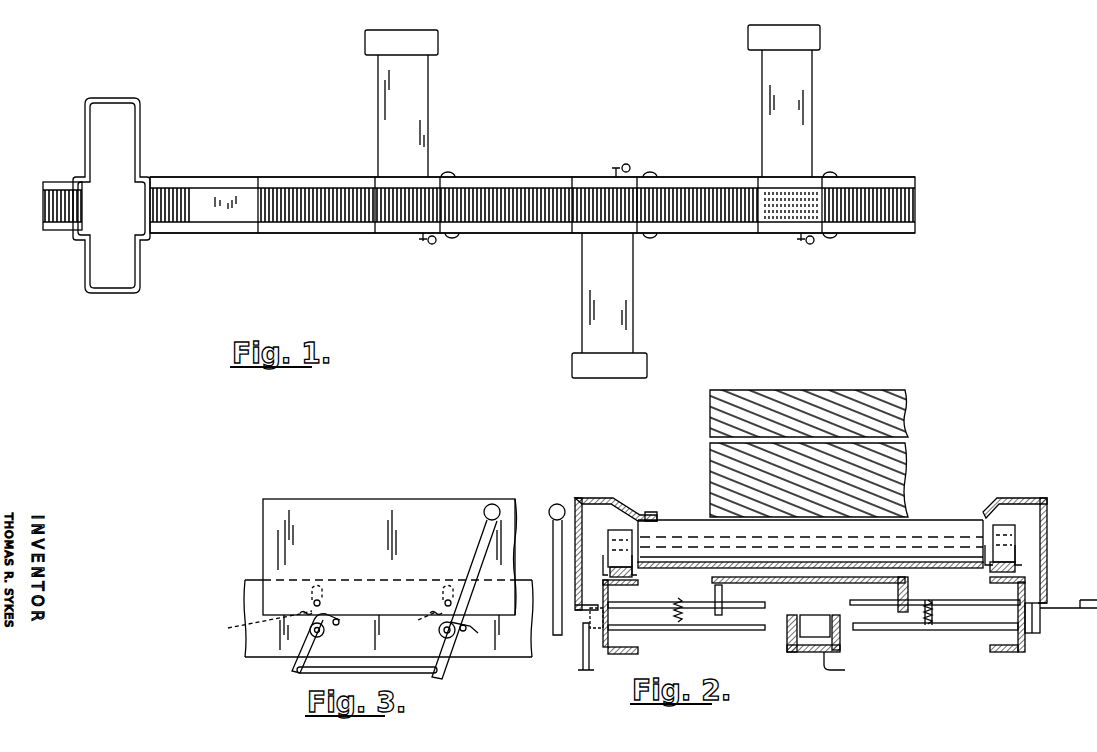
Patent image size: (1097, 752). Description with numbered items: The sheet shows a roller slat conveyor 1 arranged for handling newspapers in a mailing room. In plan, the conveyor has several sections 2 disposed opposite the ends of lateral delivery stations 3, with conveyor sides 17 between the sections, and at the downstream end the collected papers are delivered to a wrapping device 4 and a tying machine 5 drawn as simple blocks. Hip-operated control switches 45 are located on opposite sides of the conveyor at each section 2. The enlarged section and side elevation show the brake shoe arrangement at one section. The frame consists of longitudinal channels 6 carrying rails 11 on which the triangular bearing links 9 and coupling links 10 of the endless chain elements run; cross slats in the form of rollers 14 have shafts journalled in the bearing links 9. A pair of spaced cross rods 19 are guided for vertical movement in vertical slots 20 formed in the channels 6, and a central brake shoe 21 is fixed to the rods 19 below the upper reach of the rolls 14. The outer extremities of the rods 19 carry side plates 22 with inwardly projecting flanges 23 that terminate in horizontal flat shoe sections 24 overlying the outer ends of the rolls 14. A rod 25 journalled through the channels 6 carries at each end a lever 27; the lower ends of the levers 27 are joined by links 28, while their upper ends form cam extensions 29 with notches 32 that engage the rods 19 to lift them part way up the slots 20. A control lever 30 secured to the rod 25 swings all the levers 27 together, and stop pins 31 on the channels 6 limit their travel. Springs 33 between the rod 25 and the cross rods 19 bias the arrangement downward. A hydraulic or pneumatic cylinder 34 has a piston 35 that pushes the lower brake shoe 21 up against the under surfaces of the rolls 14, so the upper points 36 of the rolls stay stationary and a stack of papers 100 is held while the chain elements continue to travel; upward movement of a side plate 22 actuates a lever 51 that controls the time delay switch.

In FIG. 1, the roller slat conveyor 1 is at (516, 168).
In FIG. 1, the conveyor sections 2 is at (402, 208).
In FIG. 1, the lateral delivery stations 3 is at (416, 90).
In FIG. 1, the wrapping device 4 is at (220, 186).
In FIG. 2, the wrapping device 4 is at (788, 357).
In FIG. 1, the tying machine 5 is at (113, 115).
In FIG. 1, the sides 17 is at (315, 234).
In FIG. 1, the control switches 45 is at (455, 173).
In FIG. 2, the papers 100 is at (858, 390).
In FIG. 2, the side plates 22 is at (573, 518).
In FIG. 2, the flanges 23 is at (600, 497).
In FIG. 2, the horizontal flat shoe sections 24 is at (645, 512).
In FIG. 2, the rollers 14 is at (690, 530).
In FIG. 2, the upper points of the rolls 36 is at (655, 513).
In FIG. 3, the control lever 30 is at (486, 506).
In FIG. 2, the control lever 30 is at (553, 558).
In FIG. 2, the springs 33 is at (679, 600).
In FIG. 2, the rod 25 is at (722, 628).
In FIG. 3, the stop pins 31 is at (500, 672).
In FIG. 2, the stop pins 31 is at (596, 630).
In FIG. 2, the hydraulic or pneumatic cylinder 34 is at (800, 653).
In FIG. 2, the piston 35 is at (836, 626).
In FIG. 3, the cross rods 19 is at (322, 603).
In FIG. 2, the cross rods 19 is at (945, 600).
In FIG. 2, the central brake shoe 21 is at (882, 578).
In FIG. 2, the coupling links 10 is at (1004, 526).
In FIG. 2, the triangular bearing links 9 is at (1058, 538).
In FIG. 2, the rails 11 is at (1016, 570).
In FIG. 2, the lever 51 is at (1088, 598).
In FIG. 2, the longitudinal channels 6 is at (1026, 642).
In FIG. 3, the vertical slots 20 is at (310, 595).
In FIG. 3, the notches 32 is at (340, 619).
In FIG. 3, the cam extensions 29 is at (325, 632).
In FIG. 3, the levers 27 is at (297, 660).
In FIG. 3, the links 28 is at (347, 673).